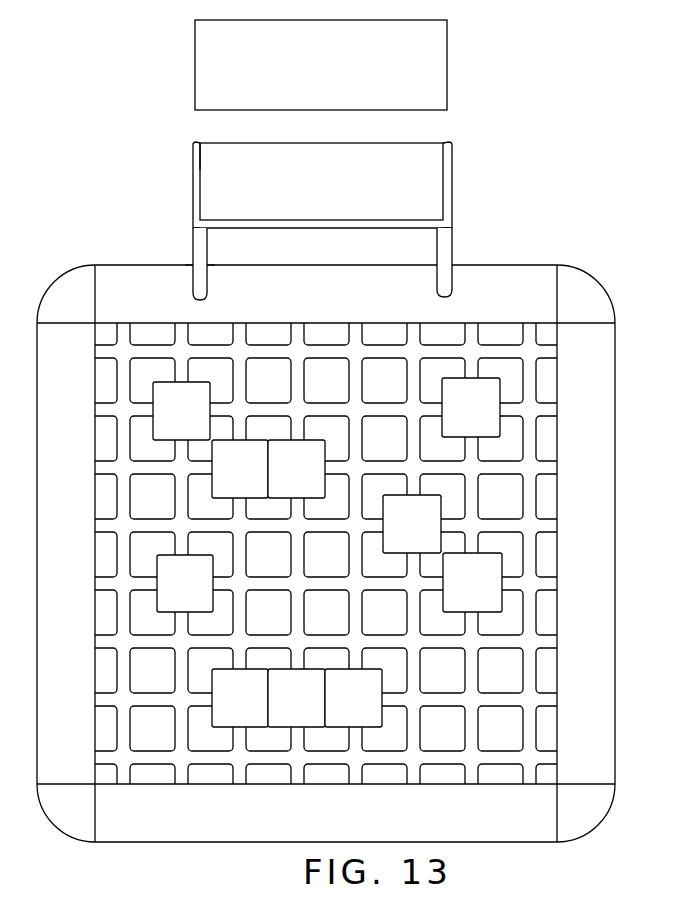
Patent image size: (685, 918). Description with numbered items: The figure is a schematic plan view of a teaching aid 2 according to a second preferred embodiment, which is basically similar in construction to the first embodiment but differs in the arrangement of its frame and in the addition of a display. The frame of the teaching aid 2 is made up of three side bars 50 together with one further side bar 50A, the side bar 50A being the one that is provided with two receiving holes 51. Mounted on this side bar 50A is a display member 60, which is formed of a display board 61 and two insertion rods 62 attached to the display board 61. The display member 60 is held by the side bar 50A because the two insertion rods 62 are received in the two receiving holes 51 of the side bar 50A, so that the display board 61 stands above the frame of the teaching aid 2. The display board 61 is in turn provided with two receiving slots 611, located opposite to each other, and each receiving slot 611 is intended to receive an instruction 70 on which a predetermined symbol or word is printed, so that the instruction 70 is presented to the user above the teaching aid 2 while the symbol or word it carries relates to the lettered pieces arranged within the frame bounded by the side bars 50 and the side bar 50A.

The teaching aid 2 is at (361, 431).
The side bar 50 is at (361, 514).
The side bar 50A is at (510, 275).
The receiving hole 51 is at (197, 302).
The display member 60 is at (355, 197).
The display board 61 is at (325, 165).
The receiving slot 611 is at (200, 170).
The insertion rod 62 is at (453, 240).
The instruction 70 is at (447, 62).